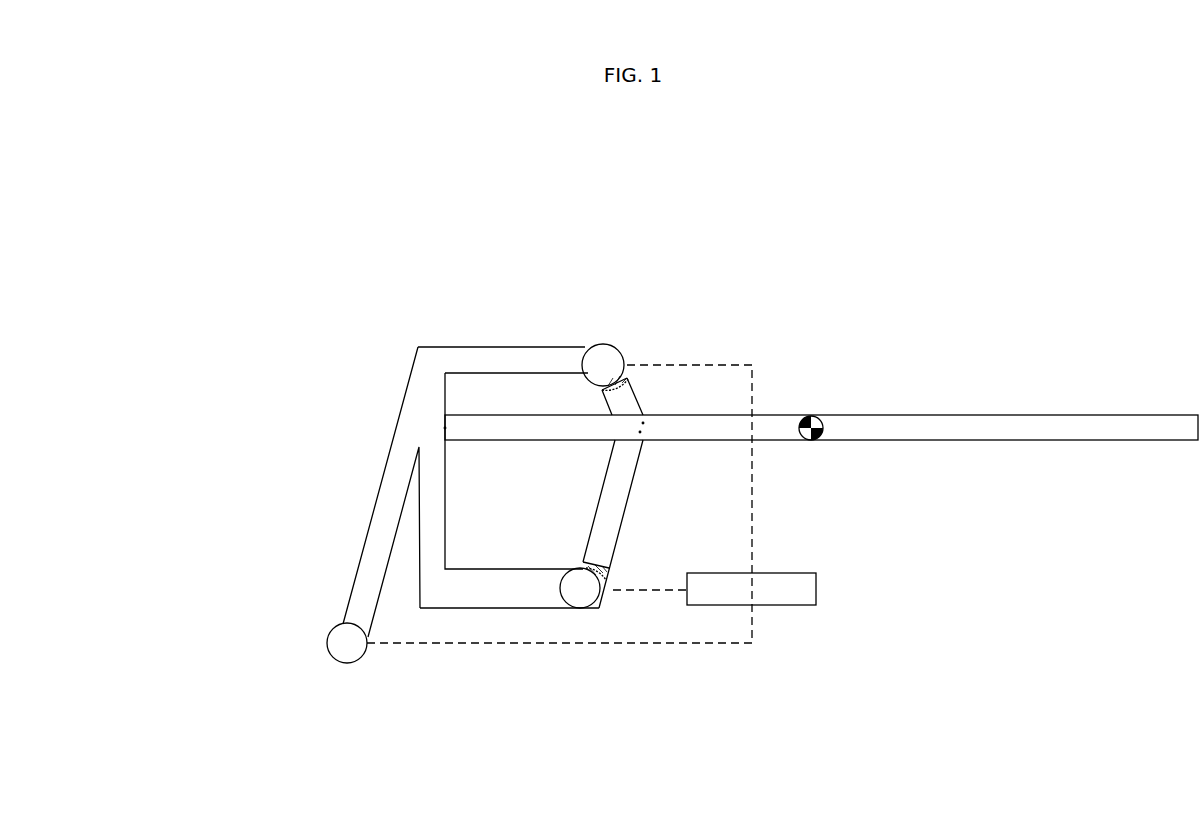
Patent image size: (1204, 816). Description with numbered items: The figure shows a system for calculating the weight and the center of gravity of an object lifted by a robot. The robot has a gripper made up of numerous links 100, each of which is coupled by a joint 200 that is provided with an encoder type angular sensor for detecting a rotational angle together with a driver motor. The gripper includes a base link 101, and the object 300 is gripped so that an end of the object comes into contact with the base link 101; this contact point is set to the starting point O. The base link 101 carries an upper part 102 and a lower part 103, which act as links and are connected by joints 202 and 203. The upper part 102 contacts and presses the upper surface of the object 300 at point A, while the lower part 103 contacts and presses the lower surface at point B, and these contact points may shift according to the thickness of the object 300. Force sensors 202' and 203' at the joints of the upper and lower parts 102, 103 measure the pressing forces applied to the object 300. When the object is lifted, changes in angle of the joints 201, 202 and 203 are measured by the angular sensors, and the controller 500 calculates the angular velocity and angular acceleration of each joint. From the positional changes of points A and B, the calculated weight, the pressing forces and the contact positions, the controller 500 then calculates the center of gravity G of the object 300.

The links 100 is at (438, 322).
The base link 101 is at (368, 480).
The upper part 102 is at (630, 400).
The lower part 103 is at (620, 500).
The joint 200 is at (320, 650).
The joint 201 is at (348, 645).
The joint 202 is at (600, 343).
The force sensor 202' is at (637, 351).
The joint 203 is at (572, 636).
The force sensor 203' is at (651, 620).
The object 300 is at (990, 428).
The controller 500 is at (818, 590).
The center of gravity G is at (815, 420).
The point A is at (643, 423).
The point B is at (640, 432).
The starting point O is at (445, 428).